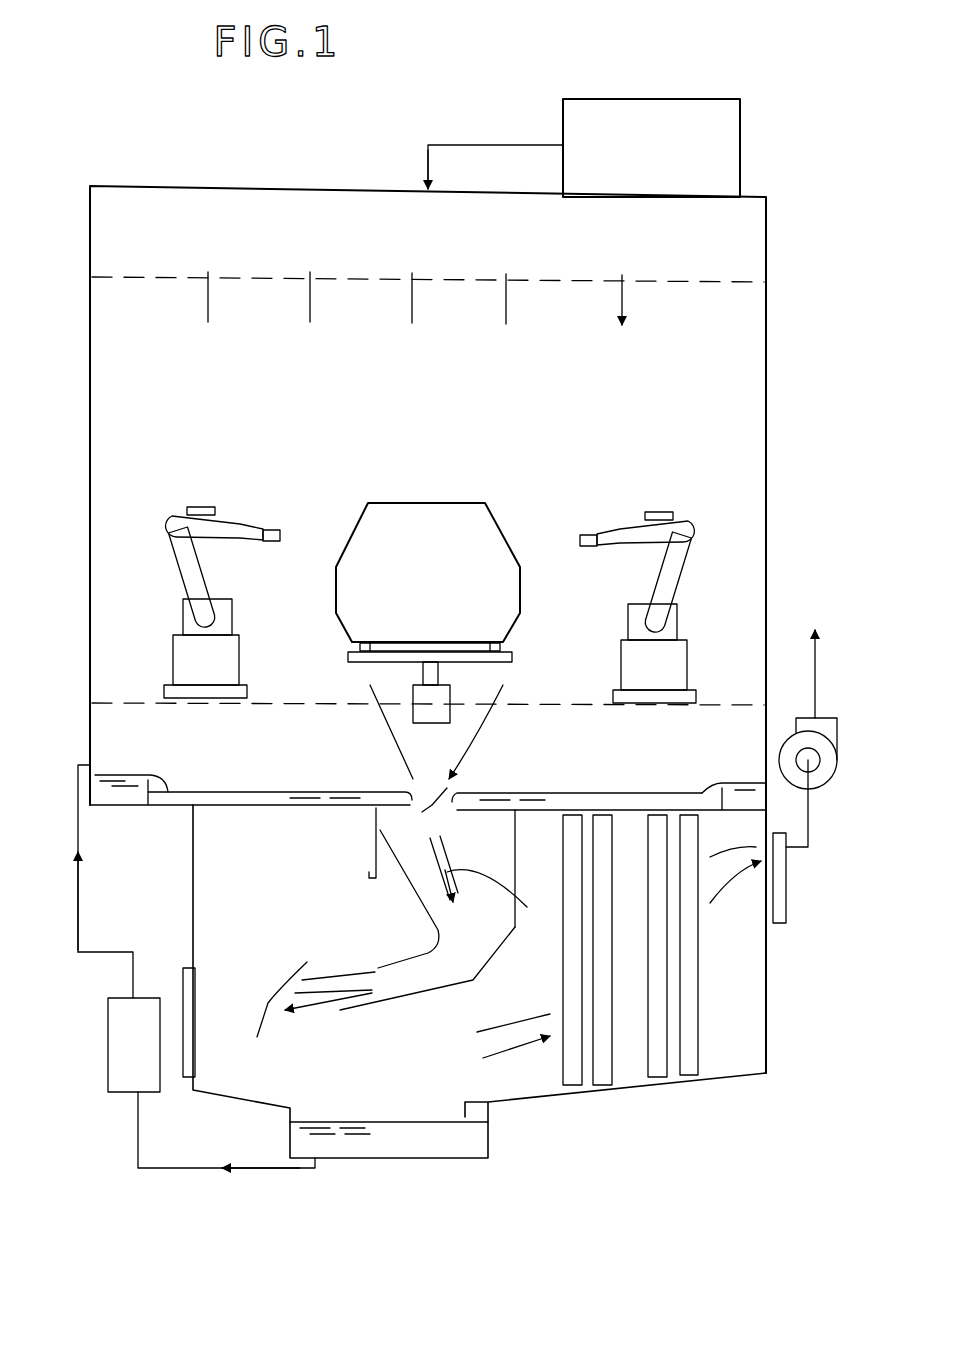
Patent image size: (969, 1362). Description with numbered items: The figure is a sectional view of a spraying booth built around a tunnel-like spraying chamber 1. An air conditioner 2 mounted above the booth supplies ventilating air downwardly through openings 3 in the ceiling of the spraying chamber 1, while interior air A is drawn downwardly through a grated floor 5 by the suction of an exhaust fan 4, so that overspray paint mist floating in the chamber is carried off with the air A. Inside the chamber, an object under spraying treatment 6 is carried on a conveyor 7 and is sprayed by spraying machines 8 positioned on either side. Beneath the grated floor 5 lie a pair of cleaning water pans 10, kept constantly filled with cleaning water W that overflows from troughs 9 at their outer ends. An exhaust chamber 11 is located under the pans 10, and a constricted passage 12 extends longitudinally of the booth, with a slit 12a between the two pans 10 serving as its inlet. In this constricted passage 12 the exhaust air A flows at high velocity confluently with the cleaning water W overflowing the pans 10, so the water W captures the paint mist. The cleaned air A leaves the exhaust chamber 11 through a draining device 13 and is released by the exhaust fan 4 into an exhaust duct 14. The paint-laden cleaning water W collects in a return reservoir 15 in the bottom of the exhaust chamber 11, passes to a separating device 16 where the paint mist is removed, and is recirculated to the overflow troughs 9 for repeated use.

The spraying chamber 1 is at (422, 629).
The air conditioner 2 is at (573, 123).
The openings 3 is at (162, 282).
The exhaust fan 4 is at (823, 772).
The grated floor 5 is at (293, 700).
The object under spraying treatment 6 is at (492, 540).
The conveyor 7 is at (438, 703).
The spraying machines 8 is at (227, 523).
The overflow troughs 9 is at (147, 798).
The cleaning water pans 10 is at (225, 805).
The exhaust chamber 11 is at (474, 981).
The constricted passage 12 is at (427, 893).
The slit 12a is at (430, 806).
The draining device 13 is at (658, 1068).
The exhaust duct 14 is at (815, 662).
The return reservoir 15 is at (290, 1135).
The separating device 16 is at (147, 1008).
The air A is at (400, 753).
The cleaning water W is at (302, 792).